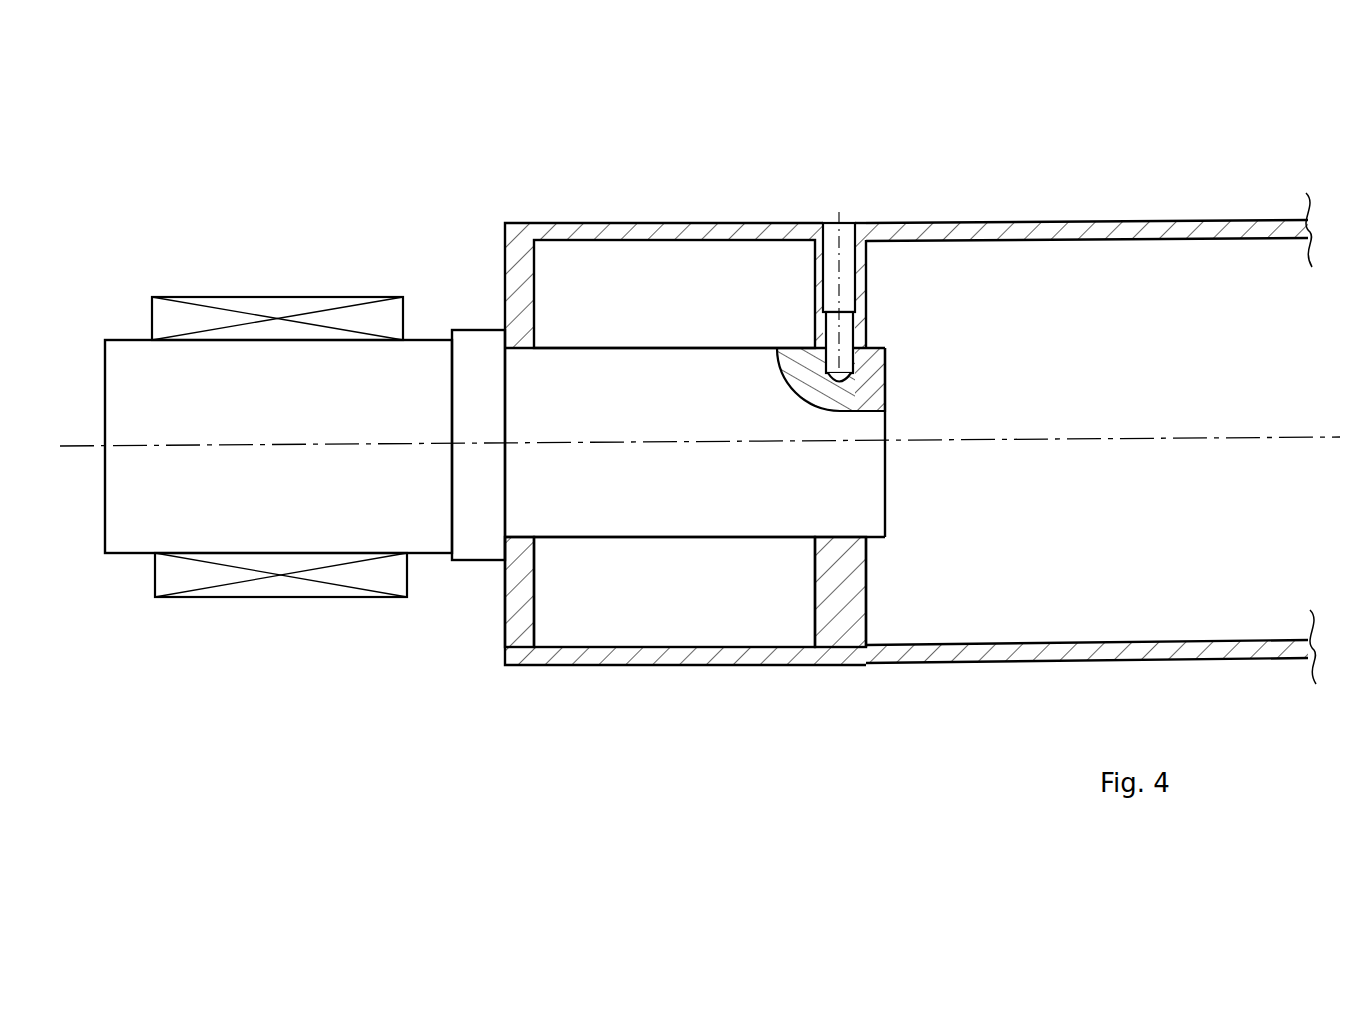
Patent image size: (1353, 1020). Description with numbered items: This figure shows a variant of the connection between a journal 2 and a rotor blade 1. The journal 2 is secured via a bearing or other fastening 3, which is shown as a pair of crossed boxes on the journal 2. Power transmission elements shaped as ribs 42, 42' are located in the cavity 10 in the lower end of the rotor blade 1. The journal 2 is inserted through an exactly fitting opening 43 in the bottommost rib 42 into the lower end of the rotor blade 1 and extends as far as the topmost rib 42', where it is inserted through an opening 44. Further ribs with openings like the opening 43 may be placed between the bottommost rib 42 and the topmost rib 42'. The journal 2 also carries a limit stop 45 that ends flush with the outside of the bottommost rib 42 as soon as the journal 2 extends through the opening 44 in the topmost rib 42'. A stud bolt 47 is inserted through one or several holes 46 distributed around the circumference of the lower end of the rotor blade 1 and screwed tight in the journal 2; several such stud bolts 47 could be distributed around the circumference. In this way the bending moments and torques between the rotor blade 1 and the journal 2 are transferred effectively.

The rotor blade 1 is at (1117, 223).
The journal 2 is at (415, 440).
The bearing or other fastening 3 is at (277, 312).
The cavity 10 is at (1155, 344).
The bottommost rib 42 is at (664, 493).
The topmost rib 42' is at (857, 645).
The opening 43 is at (518, 540).
The opening 44 is at (868, 538).
The limit stop 45 is at (482, 360).
The holes 46 is at (832, 252).
The stud bolt 47 is at (842, 348).